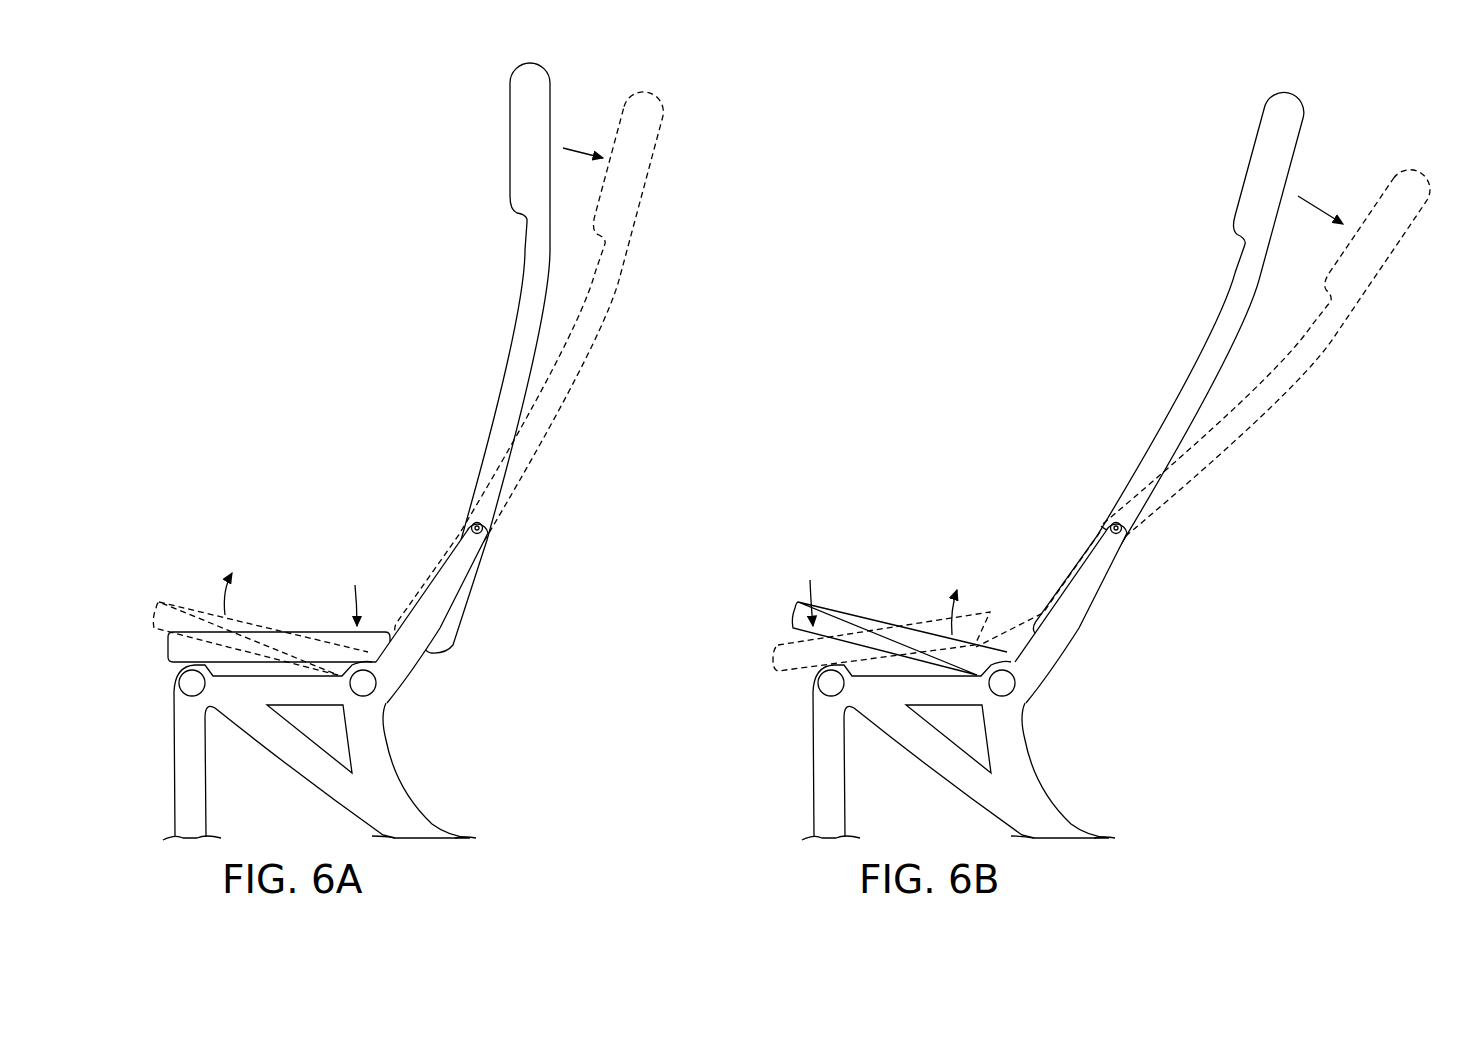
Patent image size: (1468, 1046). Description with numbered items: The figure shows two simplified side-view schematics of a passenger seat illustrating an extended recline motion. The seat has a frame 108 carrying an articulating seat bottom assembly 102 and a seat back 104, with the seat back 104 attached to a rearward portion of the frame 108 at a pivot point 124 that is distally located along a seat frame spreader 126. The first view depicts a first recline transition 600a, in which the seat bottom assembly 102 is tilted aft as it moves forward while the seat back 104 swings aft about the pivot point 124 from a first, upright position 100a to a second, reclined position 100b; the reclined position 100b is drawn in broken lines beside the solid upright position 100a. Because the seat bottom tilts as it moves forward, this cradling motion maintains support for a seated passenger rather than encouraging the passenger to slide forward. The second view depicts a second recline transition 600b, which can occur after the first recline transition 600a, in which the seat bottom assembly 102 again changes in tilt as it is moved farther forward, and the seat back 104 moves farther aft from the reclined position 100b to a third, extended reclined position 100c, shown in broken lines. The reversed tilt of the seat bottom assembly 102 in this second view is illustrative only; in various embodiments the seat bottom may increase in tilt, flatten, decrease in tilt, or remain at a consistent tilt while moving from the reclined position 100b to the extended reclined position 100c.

In FIG. 6A, the first recline transition 600a is at (436, 70).
In FIG. 6B, the second recline transition 600b is at (1076, 70).
In FIG. 6A, the upright position 100a is at (508, 193).
In FIG. 6A, the reclined position 100b is at (657, 143).
In FIG. 6B, the reclined position 100b is at (1243, 180).
In FIG. 6B, the extended reclined position 100c is at (1360, 313).
In FIG. 6A, the articulating seat bottom assembly 102 is at (185, 597).
In FIG. 6B, the articulating seat bottom assembly 102 is at (858, 603).
In FIG. 6A, the seat back 104 is at (468, 374).
In FIG. 6B, the seat back 104 is at (1156, 355).
In FIG. 6A, the frame 108 is at (410, 775).
In FIG. 6B, the frame 108 is at (1048, 775).
In FIG. 6A, the pivot point 124 is at (489, 536).
In FIG. 6B, the pivot point 124 is at (1128, 536).
In FIG. 6A, the seat frame spreader 126 is at (422, 650).
In FIG. 6B, the seat frame spreader 126 is at (1068, 645).